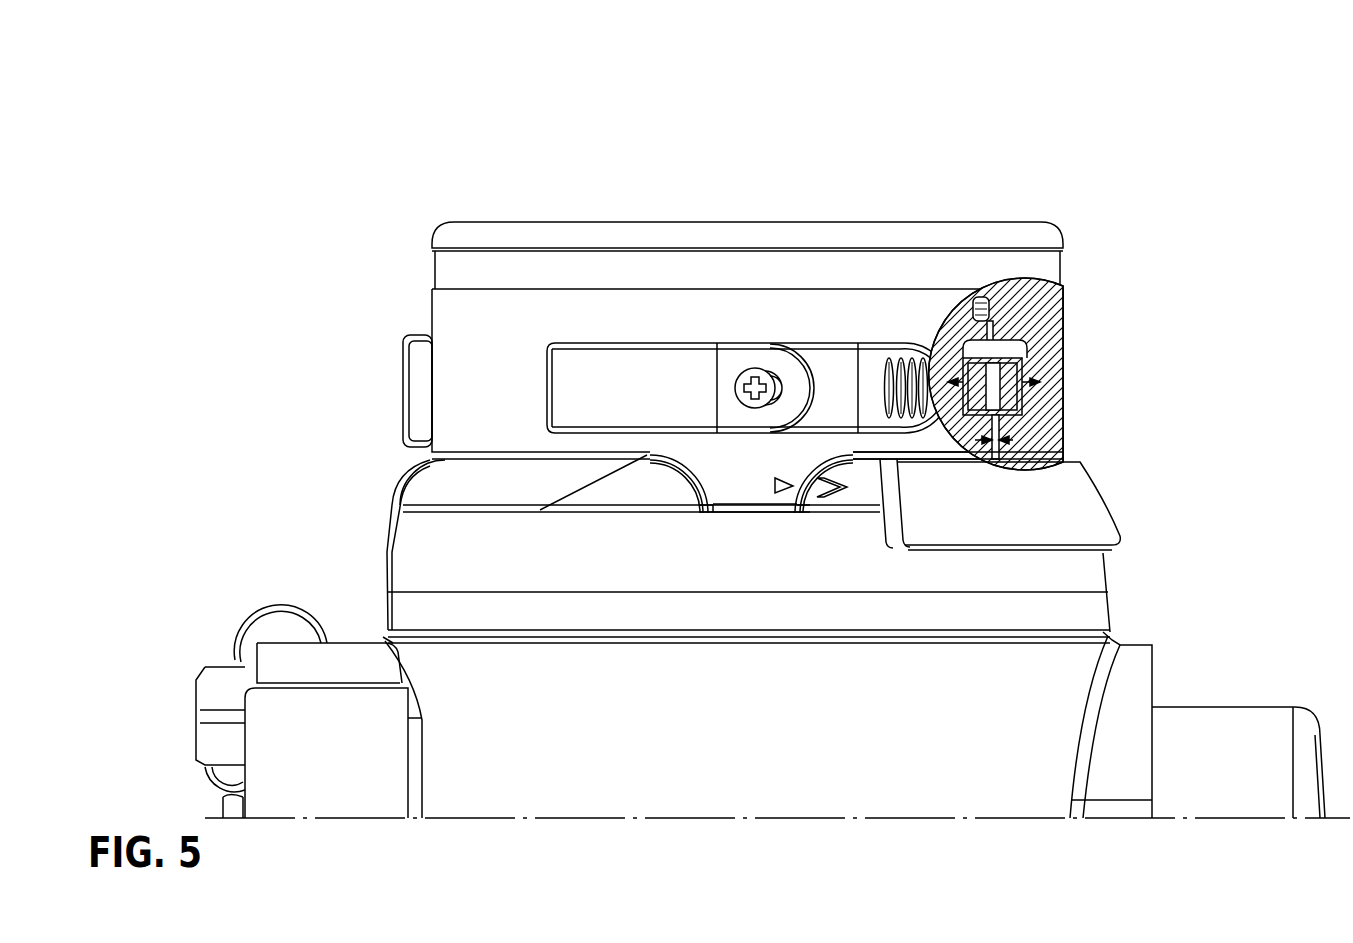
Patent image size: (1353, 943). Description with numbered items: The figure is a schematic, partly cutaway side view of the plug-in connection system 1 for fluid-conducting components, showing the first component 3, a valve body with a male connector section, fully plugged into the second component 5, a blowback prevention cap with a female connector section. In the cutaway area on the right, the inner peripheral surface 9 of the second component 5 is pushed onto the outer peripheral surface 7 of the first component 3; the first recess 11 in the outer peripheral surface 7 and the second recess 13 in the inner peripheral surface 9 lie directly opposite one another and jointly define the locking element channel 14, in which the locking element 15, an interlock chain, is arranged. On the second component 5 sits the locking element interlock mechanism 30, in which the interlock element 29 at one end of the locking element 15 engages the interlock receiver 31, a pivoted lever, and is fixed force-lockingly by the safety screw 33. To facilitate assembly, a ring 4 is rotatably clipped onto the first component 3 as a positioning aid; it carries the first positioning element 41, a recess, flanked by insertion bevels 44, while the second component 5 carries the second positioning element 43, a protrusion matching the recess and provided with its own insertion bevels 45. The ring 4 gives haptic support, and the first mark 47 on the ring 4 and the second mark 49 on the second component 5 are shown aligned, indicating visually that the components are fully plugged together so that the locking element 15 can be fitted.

The plug-in connection system 1 is at (407, 188).
The first component 3 is at (422, 550).
The ring 4 is at (1097, 532).
The second component 5 is at (455, 318).
The outer peripheral surface 7 is at (965, 462).
The inner peripheral surface 9 is at (1010, 432).
The first recess 11 is at (922, 342).
The second recess 13 is at (1035, 380).
The locking element channel 14 is at (1003, 335).
The locking element 15 is at (1020, 390).
The interlock element 29 is at (835, 380).
The locking element interlock mechanism 30 is at (832, 160).
The interlock receiver 31 is at (625, 375).
The safety screw 33 is at (758, 376).
The first positioning element 41 is at (750, 519).
The second positioning element 43 is at (823, 468).
The insertion bevels 44 is at (683, 490).
The insertion bevels 45 is at (708, 468).
The first mark 47 is at (830, 497).
The second mark 49 is at (755, 490).